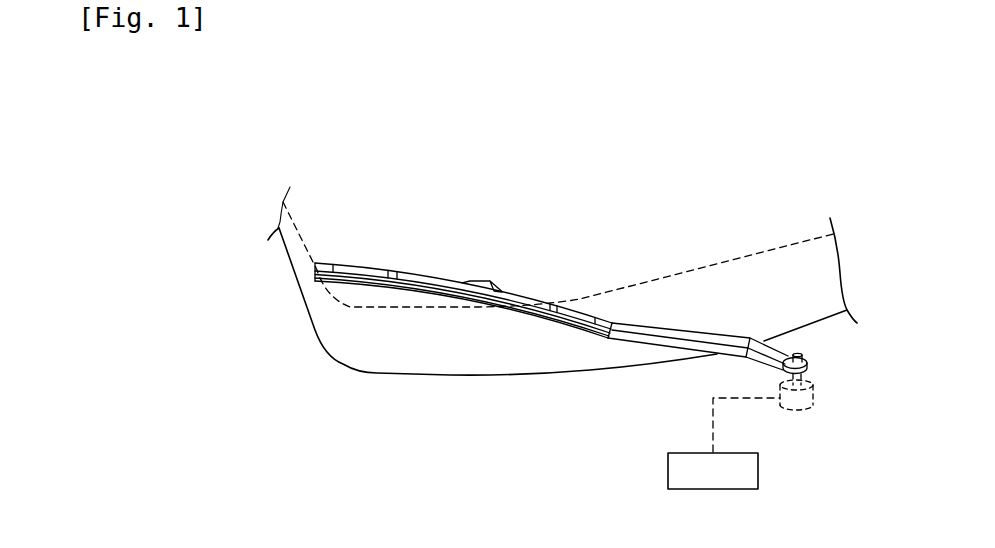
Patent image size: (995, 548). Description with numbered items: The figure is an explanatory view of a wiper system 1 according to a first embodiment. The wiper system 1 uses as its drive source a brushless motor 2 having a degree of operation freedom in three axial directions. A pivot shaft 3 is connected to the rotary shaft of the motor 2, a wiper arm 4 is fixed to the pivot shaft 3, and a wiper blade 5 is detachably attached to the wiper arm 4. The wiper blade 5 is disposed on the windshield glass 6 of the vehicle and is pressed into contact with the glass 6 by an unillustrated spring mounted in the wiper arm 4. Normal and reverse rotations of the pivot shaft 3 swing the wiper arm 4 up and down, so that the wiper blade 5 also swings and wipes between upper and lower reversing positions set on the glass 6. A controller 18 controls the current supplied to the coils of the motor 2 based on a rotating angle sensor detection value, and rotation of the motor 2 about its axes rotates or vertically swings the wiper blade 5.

The wiper system 1 is at (576, 338).
The brushless motor 2 is at (813, 398).
The pivot shaft 3 is at (803, 352).
The wiper arm 4 is at (728, 338).
The wiper blade 5 is at (418, 294).
The windshield glass 6 is at (433, 207).
The controller 18 is at (750, 470).